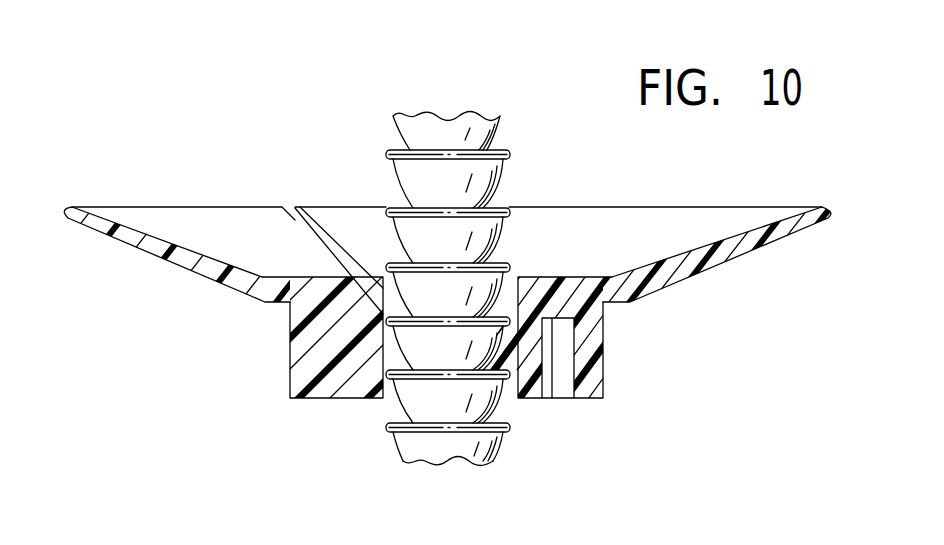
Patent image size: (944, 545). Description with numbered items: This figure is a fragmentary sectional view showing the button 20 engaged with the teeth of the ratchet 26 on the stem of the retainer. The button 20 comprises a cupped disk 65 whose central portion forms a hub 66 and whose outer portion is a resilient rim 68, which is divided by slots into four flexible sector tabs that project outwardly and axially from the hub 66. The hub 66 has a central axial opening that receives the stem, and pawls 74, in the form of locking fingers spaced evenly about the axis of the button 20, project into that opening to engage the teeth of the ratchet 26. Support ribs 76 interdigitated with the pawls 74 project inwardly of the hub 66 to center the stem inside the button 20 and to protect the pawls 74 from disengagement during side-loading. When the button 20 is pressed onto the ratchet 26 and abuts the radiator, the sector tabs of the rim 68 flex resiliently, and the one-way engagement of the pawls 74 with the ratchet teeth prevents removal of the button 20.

The button 20 is at (588, 205).
The ratchet 26 is at (502, 452).
The cupped disk 65 is at (740, 247).
The resilient rim 68 is at (183, 266).
The hub 66 is at (605, 345).
The support ribs 76 is at (300, 347).
The pawls 74 is at (517, 343).